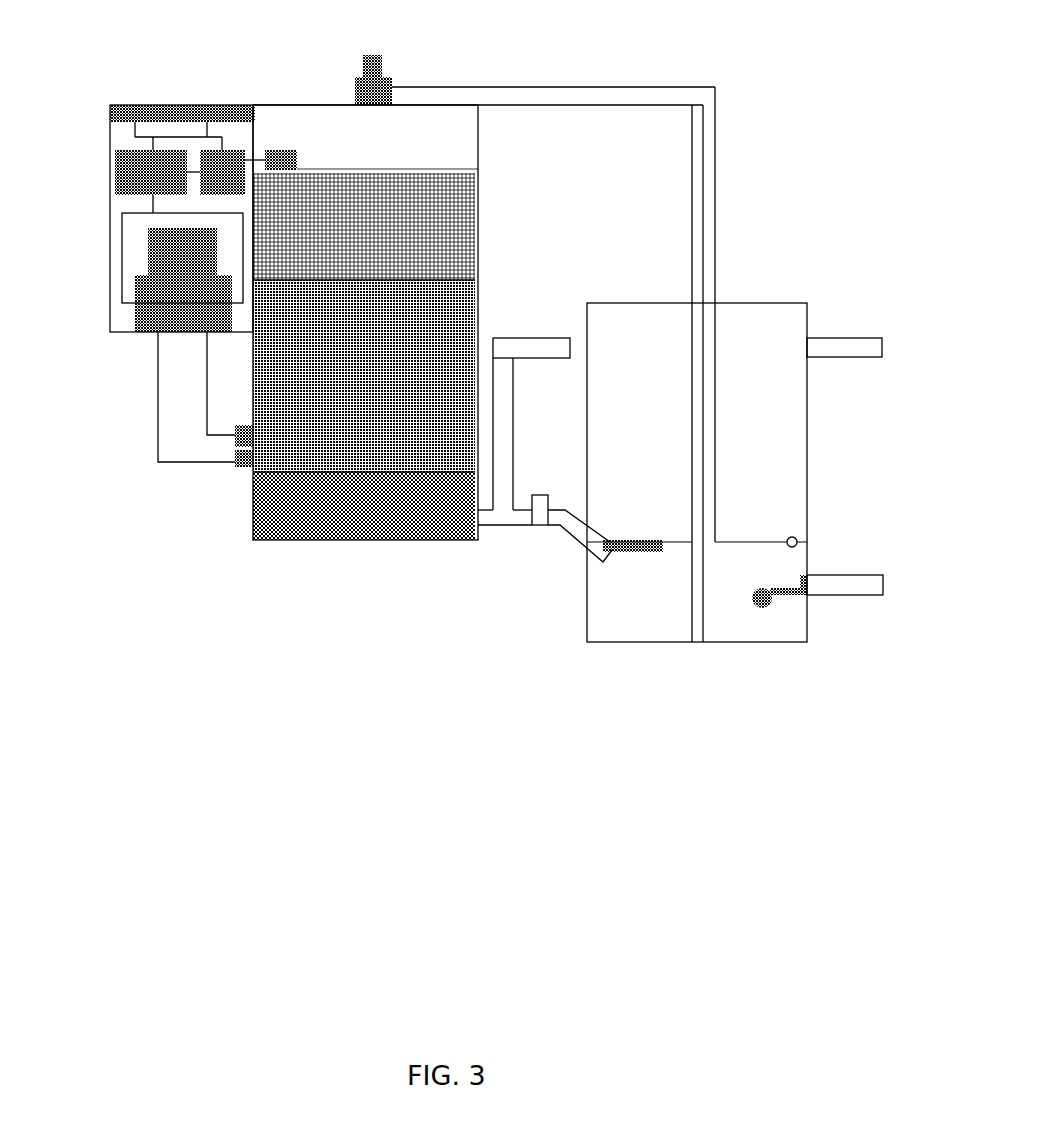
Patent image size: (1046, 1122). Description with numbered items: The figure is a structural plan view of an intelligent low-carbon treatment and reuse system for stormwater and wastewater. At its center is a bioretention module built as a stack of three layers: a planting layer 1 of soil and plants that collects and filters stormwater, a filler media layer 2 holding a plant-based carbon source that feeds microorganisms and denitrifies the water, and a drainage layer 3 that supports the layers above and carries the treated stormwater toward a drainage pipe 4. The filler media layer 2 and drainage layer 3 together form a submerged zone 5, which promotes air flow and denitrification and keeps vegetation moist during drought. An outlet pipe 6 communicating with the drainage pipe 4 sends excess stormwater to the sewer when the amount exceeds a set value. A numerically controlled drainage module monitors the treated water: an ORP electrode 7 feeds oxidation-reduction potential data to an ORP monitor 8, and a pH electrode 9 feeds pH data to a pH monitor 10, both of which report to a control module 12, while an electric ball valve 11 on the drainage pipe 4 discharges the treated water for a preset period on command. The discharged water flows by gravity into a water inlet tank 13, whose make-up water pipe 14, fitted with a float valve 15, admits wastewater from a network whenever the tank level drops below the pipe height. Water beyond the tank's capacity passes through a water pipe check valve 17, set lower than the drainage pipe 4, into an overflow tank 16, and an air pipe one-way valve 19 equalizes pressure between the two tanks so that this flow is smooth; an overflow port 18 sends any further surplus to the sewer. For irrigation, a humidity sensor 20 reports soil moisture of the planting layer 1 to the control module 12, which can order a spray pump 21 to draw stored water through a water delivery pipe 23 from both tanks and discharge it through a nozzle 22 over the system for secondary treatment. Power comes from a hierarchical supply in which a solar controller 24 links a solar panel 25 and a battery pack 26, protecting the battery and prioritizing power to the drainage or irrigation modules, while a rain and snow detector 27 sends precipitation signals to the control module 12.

The planting layer 1 is at (450, 240).
The filler media layer 2 is at (455, 305).
The drainage layer 3 is at (355, 520).
The drainage pipe 4 is at (578, 538).
The submerged zone 5 is at (456, 352).
The outlet pipe 6 is at (530, 347).
The ORP electrode 7 is at (245, 460).
The ORP monitor 8 is at (155, 315).
The pH electrode 9 is at (245, 437).
The pH monitor 10 is at (205, 315).
The electric ball valve 11 is at (540, 520).
The control module 12 is at (150, 250).
The water inlet tank 13 is at (793, 568).
The make-up water pipe 14 is at (862, 585).
The float valve 15 is at (771, 595).
The overflow tank 16 is at (790, 440).
The water pipe check valve 17 is at (635, 555).
The overflow port 18 is at (887, 343).
The air pipe one-way valve 19 is at (797, 540).
The humidity sensor 20 is at (282, 160).
The spray pump 21 is at (360, 100).
The nozzle 22 is at (365, 62).
The water delivery pipe 23 is at (700, 95).
The solar controller 24 is at (223, 158).
The solar panel 25 is at (205, 115).
The battery pack 26 is at (133, 172).
The rain and snow detector 27 is at (128, 113).